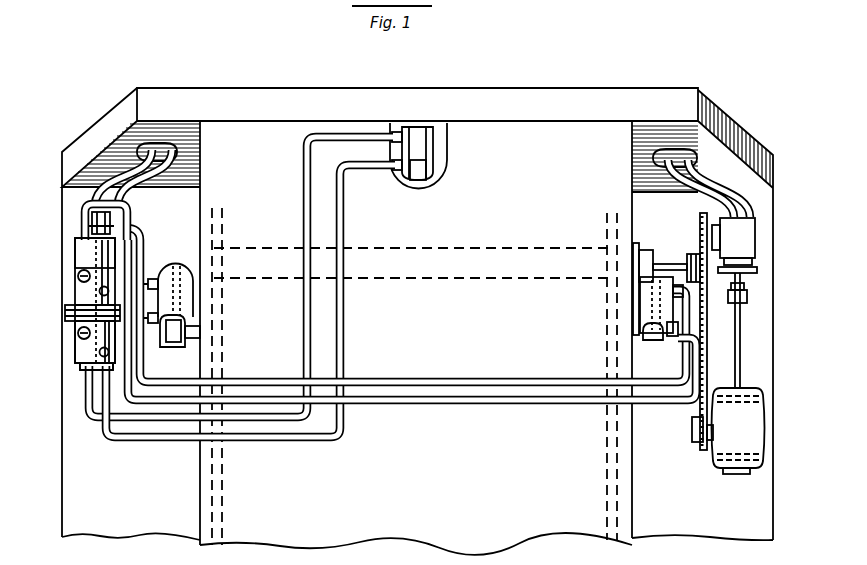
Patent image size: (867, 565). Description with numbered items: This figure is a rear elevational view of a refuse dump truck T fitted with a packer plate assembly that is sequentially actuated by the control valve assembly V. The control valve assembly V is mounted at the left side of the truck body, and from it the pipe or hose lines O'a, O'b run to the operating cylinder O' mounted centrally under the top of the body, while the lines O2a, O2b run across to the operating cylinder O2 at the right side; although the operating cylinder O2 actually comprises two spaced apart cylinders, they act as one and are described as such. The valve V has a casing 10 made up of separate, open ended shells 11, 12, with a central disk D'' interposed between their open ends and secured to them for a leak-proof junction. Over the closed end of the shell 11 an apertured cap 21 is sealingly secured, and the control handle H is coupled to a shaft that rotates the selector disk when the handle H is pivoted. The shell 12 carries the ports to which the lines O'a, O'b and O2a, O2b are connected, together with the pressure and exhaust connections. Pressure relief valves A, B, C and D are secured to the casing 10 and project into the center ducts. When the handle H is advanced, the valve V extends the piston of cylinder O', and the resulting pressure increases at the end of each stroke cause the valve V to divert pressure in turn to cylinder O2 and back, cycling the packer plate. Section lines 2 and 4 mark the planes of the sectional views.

The dump truck T is at (650, 92).
The section line 2- 2 is at (389, 82).
The section line 4- 4 is at (70, 148).
The operating cylinder O' is at (434, 156).
The pipe or hose line O'a is at (250, 317).
The pipe or hose line O'b is at (210, 270).
The operating cylinder O2 is at (454, 343).
The line O2a is at (406, 309).
The line O2b is at (411, 304).
The control handle H is at (86, 220).
The apertured cap 21 is at (75, 234).
The pressure relief valve A is at (90, 261).
The pressure relief valve C is at (96, 293).
The pressure relief valve D is at (89, 374).
The central disk D'' is at (74, 315).
The casing 10 is at (66, 270).
The shell 11 is at (77, 283).
The pressure relief valve B is at (77, 337).
The shell 12 is at (80, 349).
The control valve assembly V is at (78, 360).